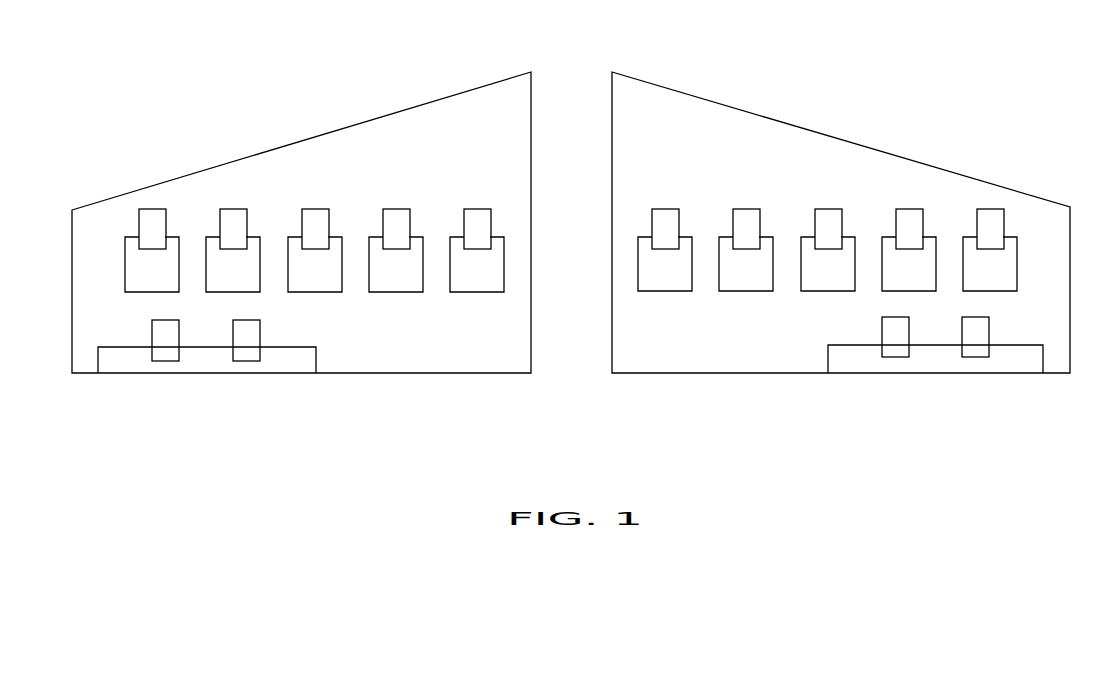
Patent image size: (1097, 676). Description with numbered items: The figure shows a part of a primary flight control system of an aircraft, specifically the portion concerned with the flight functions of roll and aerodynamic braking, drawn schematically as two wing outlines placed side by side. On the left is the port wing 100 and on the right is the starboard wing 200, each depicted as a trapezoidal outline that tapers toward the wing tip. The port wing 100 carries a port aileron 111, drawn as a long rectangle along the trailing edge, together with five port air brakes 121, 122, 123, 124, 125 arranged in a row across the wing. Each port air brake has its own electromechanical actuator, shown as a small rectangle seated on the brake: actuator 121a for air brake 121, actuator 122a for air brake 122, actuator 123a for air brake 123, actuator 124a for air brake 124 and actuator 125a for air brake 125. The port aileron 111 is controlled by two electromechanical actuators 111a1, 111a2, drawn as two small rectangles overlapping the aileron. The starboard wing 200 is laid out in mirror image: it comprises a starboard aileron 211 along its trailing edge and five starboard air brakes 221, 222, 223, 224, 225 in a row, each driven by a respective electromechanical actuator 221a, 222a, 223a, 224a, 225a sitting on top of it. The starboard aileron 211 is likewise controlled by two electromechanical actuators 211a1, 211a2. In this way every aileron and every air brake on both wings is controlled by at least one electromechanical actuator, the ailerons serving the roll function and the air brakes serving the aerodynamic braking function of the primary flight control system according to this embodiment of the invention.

The port wing 100 is at (383, 116).
The port aileron 111 is at (292, 360).
The electromechanical actuator 111a1 is at (162, 355).
The electromechanical actuator 111a2 is at (246, 355).
The port air brake 121 is at (476, 278).
The port air brake 122 is at (400, 278).
The port air brake 123 is at (317, 278).
The port air brake 124 is at (242, 280).
The port air brake 125 is at (149, 280).
The electromechanical actuator 121a is at (480, 218).
The electromechanical actuator 122a is at (399, 218).
The electromechanical actuator 123a is at (318, 218).
The electromechanical actuator 124a is at (236, 218).
The electromechanical actuator 125a is at (150, 218).
The starboard wing 200 is at (758, 112).
The starboard aileron 211 is at (848, 358).
The electromechanical actuator 211a1 is at (975, 352).
The electromechanical actuator 211a2 is at (895, 352).
The starboard air brake 221 is at (666, 278).
The starboard air brake 222 is at (748, 278).
The starboard air brake 223 is at (827, 278).
The starboard air brake 224 is at (900, 278).
The starboard air brake 225 is at (993, 278).
The electromechanical actuator 221a is at (664, 218).
The electromechanical actuator 222a is at (745, 218).
The electromechanical actuator 223a is at (826, 218).
The electromechanical actuator 224a is at (908, 218).
The electromechanical actuator 225a is at (988, 218).